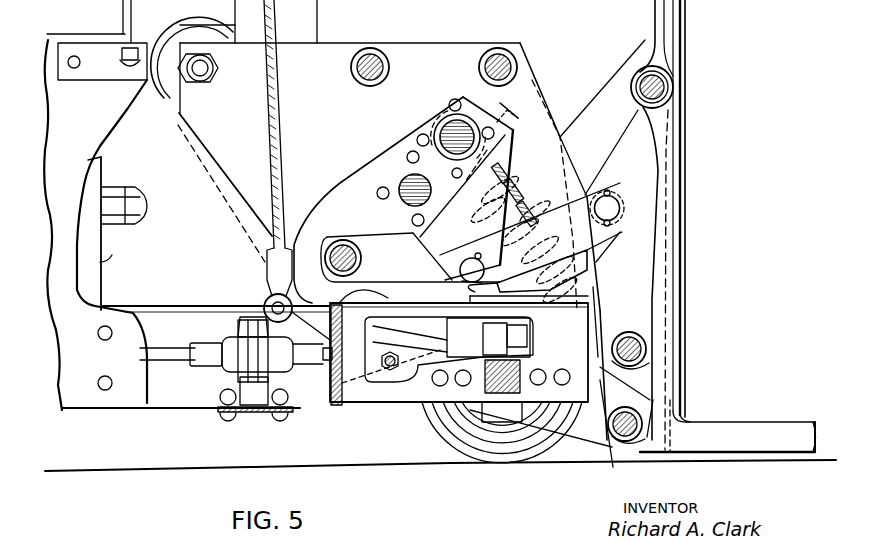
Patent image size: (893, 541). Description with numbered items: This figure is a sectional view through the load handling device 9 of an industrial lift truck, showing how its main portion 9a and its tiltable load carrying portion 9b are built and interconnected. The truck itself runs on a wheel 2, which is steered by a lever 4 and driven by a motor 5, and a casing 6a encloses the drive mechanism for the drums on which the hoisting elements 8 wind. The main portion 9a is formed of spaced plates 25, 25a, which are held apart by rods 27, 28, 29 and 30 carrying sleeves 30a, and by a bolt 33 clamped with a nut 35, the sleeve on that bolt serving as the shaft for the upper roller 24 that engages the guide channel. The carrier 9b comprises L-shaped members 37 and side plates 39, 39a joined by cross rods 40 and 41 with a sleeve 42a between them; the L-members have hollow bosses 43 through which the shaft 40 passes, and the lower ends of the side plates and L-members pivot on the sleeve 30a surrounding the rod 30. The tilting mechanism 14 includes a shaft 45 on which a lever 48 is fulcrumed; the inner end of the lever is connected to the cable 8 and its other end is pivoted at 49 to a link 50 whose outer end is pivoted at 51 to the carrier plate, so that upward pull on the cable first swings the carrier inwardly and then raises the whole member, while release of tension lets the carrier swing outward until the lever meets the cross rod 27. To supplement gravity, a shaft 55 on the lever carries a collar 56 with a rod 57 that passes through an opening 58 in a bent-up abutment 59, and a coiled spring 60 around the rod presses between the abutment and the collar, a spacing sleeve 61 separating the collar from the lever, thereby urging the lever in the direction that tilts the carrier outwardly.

The wheel 2 is at (429, 435).
The lever 4 is at (45, 2).
The motor 5 is at (123, 227).
The casing 6a is at (372, 212).
The hoisting element 8 is at (278, 34).
The load handling device 9 is at (349, 162).
The main portion 9a is at (438, 43).
The load carrying portion 9b is at (702, 198).
The tilting mechanism 14 is at (403, 200).
The roller 24 is at (168, 40).
The plate 25 is at (400, 43).
The plate 25a is at (538, 90).
The rod 27 is at (356, 254).
The rod 28 is at (376, 48).
The rod 29 is at (498, 48).
The rod 30 is at (600, 460).
The sleeve 30a is at (386, 70).
The bolt 33 is at (208, 68).
The nut 35 is at (206, 84).
The L-shaped member 37 is at (752, 422).
The side plate 39 is at (618, 96).
The side plate 39a is at (610, 130).
The cross rod 40 is at (670, 80).
The cross rod 41 is at (648, 340).
The sleeve 42a is at (670, 102).
The hollow boss 43 is at (610, 148).
The shaft 45 is at (404, 178).
The lever 48 is at (332, 217).
The pivotal connection 49 is at (466, 264).
The link 50 is at (540, 238).
The pivotal connection 51 is at (616, 203).
The shaft 55 is at (507, 105).
The collar 56 is at (505, 124).
The rod 57 is at (508, 186).
The opening 58 is at (608, 250).
The abutment 59 is at (598, 250).
The spring 60 is at (528, 200).
The spacing sleeve 61 is at (432, 120).